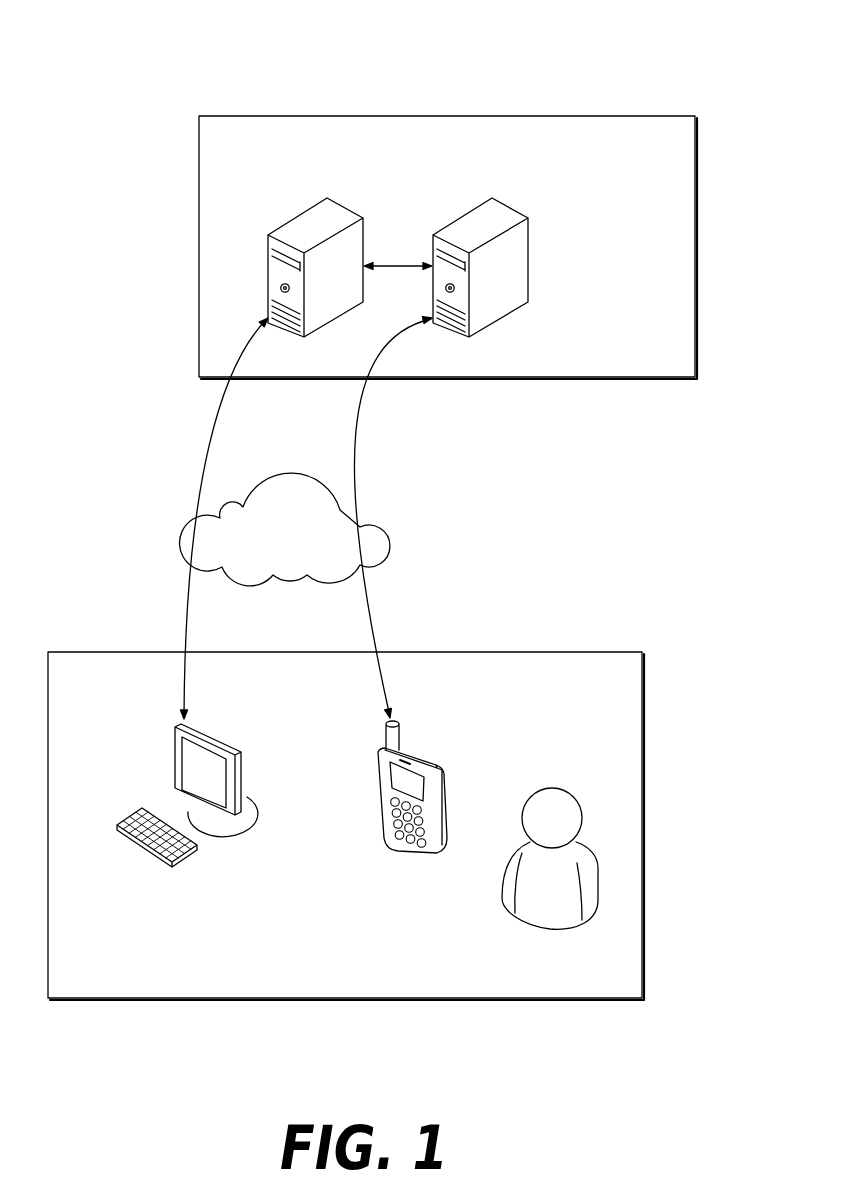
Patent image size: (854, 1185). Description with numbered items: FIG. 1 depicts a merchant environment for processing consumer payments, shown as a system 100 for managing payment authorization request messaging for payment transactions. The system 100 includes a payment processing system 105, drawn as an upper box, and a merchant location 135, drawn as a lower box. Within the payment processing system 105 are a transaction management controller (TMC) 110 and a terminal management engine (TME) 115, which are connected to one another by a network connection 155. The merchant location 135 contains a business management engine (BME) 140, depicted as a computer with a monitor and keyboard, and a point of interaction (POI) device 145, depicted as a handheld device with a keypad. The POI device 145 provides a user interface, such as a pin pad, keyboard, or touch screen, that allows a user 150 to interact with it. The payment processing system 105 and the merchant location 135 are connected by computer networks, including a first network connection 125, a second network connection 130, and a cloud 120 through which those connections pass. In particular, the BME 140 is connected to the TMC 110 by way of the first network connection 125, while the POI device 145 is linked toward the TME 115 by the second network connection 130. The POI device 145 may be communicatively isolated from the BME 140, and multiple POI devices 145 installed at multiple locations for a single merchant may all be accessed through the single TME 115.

The system 100 is at (358, 19).
The payment processing system 105 is at (277, 116).
The transaction management controller 110 is at (268, 232).
The terminal management engine 115 is at (530, 258).
The cloud 120 is at (378, 528).
The first network connection 125 is at (183, 631).
The second network connection 130 is at (376, 631).
The merchant location 135 is at (213, 998).
The business management engine 140 is at (165, 858).
The point of interaction device 145 is at (395, 848).
The user 150 is at (536, 790).
The network connection 155 is at (397, 265).